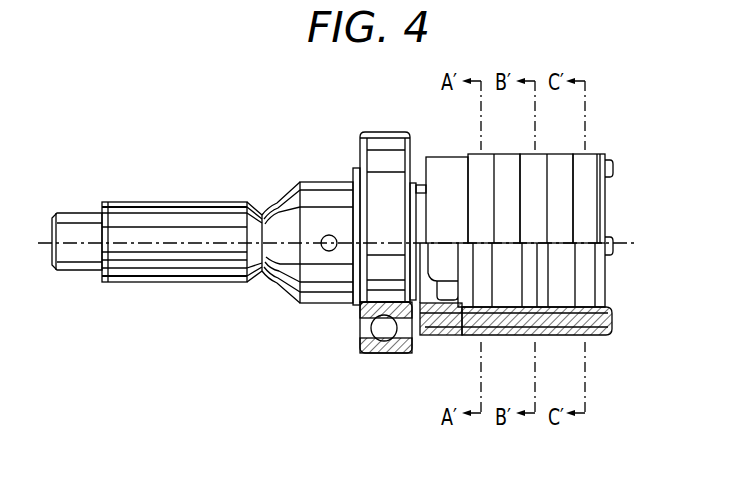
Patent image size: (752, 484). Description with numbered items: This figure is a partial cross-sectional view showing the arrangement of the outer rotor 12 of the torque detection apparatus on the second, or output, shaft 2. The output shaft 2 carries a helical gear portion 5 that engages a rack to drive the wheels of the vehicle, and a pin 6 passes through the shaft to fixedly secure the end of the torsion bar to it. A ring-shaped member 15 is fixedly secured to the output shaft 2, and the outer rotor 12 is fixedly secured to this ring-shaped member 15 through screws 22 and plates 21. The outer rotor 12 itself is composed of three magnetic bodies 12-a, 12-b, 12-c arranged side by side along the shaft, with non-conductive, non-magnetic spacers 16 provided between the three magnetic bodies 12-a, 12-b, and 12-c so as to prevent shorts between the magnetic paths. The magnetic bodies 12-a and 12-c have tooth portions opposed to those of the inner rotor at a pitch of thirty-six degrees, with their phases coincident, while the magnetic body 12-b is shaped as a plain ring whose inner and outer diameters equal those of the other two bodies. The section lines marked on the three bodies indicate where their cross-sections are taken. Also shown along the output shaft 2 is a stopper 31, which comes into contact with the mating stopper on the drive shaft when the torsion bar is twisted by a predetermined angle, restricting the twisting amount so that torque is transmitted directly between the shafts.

The second shaft 2 is at (72, 255).
The helical gear portion 5 is at (207, 262).
The pin 6 is at (330, 251).
The outer rotor 12 is at (436, 103).
The magnetic body 12-a is at (485, 225).
The magnetic body 12-b is at (540, 230).
The magnetic body 12-c is at (590, 235).
The ring-shaped member 15 is at (446, 160).
The spacer 16 is at (568, 176).
The plate 21 is at (598, 276).
The screw 22 is at (508, 336).
The stopper 31 is at (437, 328).